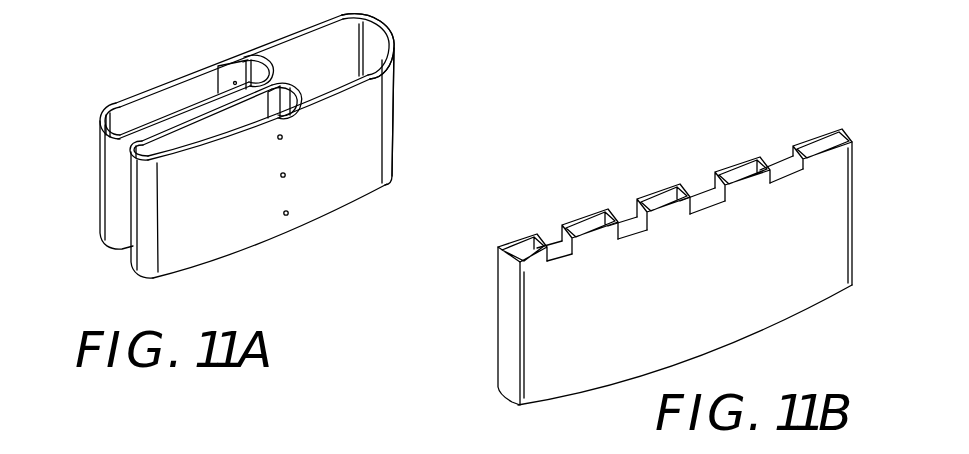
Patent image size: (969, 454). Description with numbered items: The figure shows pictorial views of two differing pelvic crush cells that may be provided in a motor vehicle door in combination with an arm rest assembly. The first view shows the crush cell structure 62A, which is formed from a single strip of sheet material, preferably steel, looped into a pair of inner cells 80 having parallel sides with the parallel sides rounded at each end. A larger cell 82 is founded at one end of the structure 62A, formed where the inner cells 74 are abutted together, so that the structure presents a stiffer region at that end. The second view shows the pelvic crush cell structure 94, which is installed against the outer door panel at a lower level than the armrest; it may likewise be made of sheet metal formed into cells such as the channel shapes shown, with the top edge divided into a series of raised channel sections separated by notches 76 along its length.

In FIG. 11A, the crush cell structure 62A is at (378, 184).
In FIG. 11A, the inner cells 80 is at (133, 115).
In FIG. 11A, the larger cell 82 is at (342, 80).
In FIG. 11B, the pelvic crush cell structure 94 is at (513, 328).
In FIG. 11B, the inner cells 74 is at (603, 222).
In FIG. 11B, the notch 76 is at (712, 188).